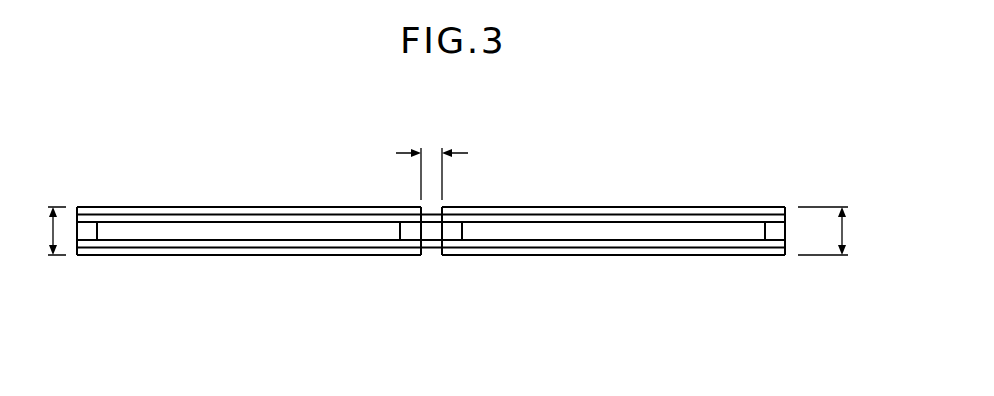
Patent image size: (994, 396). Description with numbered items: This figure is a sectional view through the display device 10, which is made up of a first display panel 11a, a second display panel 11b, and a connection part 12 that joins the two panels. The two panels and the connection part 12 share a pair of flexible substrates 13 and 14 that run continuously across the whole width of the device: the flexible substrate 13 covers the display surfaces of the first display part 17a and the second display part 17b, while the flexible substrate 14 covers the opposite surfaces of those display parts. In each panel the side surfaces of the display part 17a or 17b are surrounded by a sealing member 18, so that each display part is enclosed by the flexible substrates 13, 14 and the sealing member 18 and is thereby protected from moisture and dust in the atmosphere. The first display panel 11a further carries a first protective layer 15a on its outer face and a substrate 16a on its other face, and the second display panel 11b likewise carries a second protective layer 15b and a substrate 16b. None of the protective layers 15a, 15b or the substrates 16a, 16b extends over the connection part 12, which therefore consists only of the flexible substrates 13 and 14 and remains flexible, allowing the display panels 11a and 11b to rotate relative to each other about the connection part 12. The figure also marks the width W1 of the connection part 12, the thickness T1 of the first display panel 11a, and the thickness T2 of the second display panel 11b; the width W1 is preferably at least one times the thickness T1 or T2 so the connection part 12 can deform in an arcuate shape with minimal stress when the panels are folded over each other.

The display device 10 is at (795, 125).
The first display panel 11a is at (420, 313).
The second display panel 11b is at (785, 313).
The connection part 12 is at (431, 258).
The flexible substrate 13 is at (787, 206).
The flexible substrate 14 is at (786, 257).
The first protective layer 15a is at (210, 206).
The second protective layer 15b is at (587, 206).
The substrate 16a is at (279, 257).
The substrate 16b is at (567, 257).
The first display part 17a is at (203, 235).
The second display part 17b is at (649, 235).
The sealing member 18 is at (77, 232).
The thickness of the first display panel T1 is at (48, 234).
The thickness of the second display panel T2 is at (850, 234).
The width of the connection part W1 is at (429, 150).